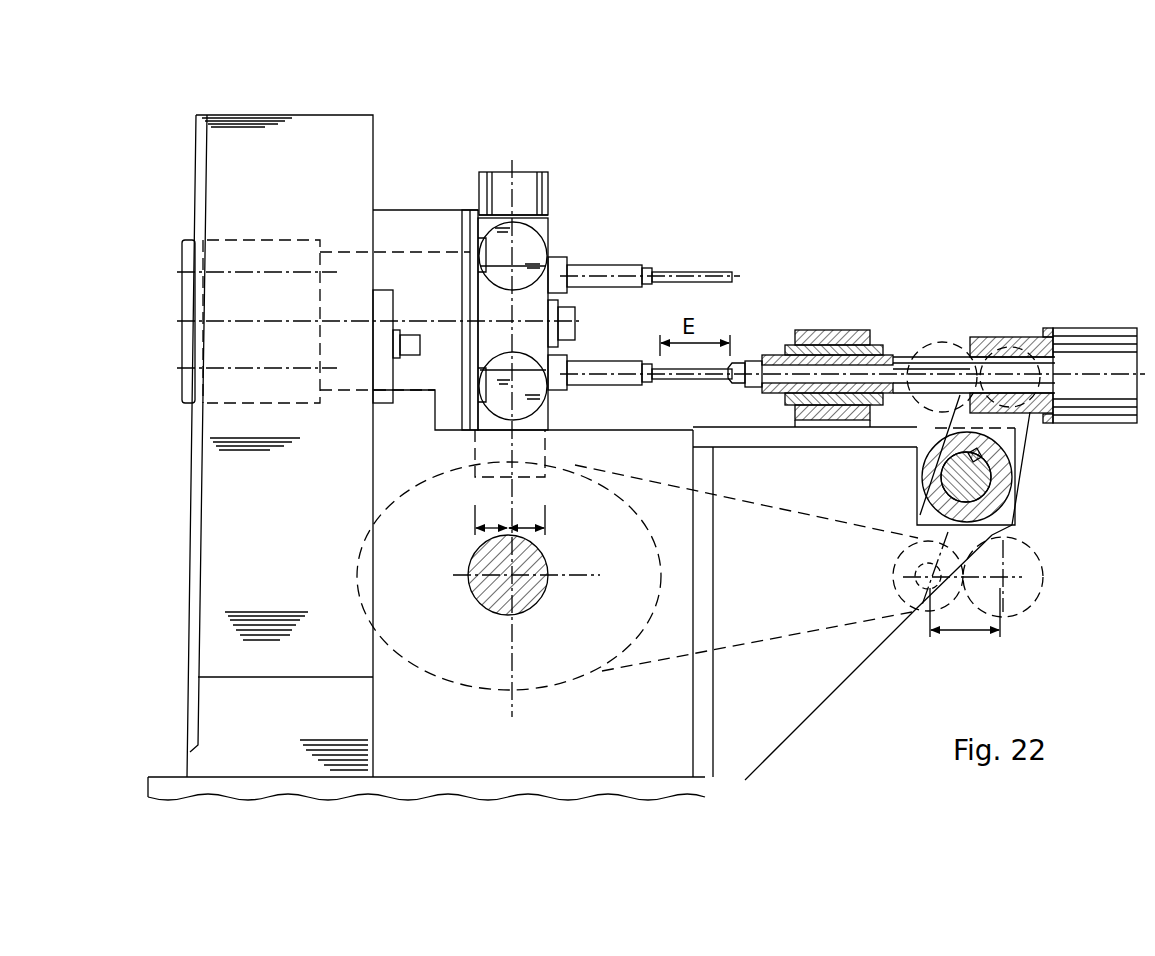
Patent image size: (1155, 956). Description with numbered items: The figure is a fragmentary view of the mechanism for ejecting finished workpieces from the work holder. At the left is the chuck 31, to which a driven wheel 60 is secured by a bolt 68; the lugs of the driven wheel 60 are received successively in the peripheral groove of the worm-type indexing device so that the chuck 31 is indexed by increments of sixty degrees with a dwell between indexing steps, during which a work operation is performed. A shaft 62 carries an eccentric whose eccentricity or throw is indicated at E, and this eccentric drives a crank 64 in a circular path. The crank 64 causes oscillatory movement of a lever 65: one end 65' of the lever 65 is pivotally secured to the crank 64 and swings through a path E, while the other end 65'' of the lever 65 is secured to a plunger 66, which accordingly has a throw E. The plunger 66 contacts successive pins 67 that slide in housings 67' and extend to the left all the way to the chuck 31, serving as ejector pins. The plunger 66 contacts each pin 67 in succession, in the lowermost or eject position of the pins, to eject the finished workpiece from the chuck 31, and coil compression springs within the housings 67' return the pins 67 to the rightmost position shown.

The chuck 31 is at (182, 243).
The driven wheel 60 is at (565, 192).
The shaft 62 is at (530, 556).
The crank 64 is at (820, 628).
The lever 65 is at (1004, 465).
The one end of lever 65' is at (894, 656).
The other end of lever 65'' is at (1022, 343).
The plunger 66 is at (893, 355).
The pins 67 is at (655, 295).
The housings 67' is at (644, 247).
The bolt 68 is at (578, 332).